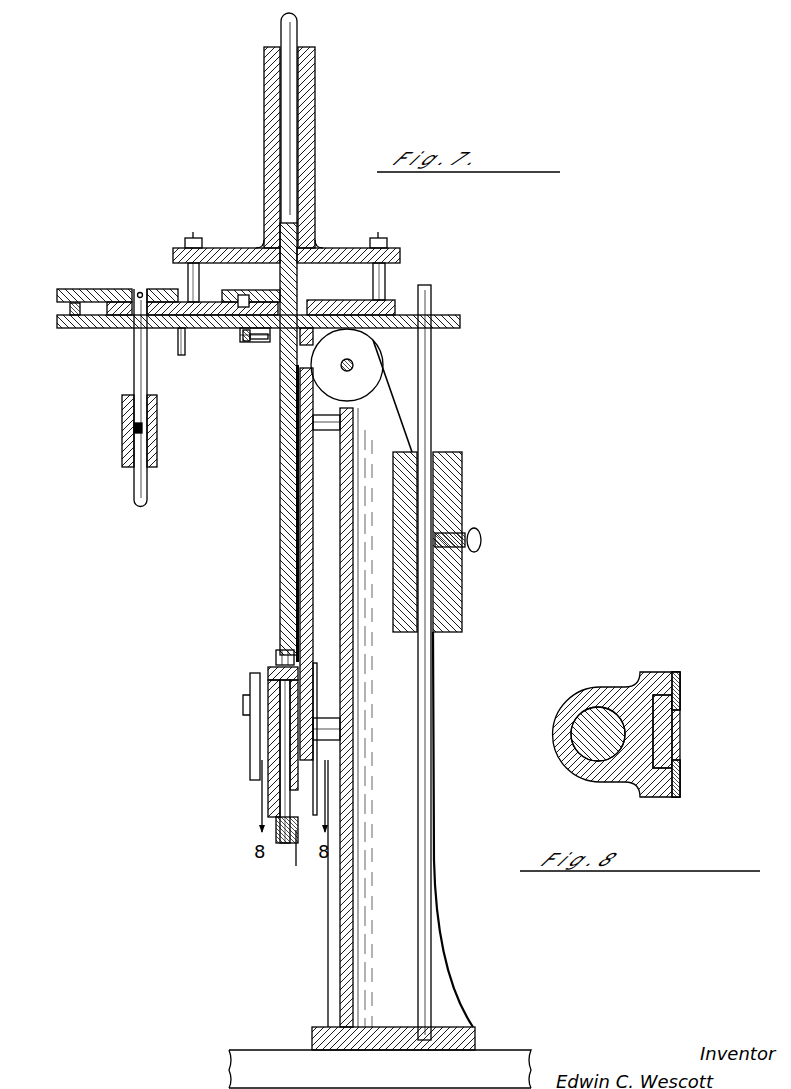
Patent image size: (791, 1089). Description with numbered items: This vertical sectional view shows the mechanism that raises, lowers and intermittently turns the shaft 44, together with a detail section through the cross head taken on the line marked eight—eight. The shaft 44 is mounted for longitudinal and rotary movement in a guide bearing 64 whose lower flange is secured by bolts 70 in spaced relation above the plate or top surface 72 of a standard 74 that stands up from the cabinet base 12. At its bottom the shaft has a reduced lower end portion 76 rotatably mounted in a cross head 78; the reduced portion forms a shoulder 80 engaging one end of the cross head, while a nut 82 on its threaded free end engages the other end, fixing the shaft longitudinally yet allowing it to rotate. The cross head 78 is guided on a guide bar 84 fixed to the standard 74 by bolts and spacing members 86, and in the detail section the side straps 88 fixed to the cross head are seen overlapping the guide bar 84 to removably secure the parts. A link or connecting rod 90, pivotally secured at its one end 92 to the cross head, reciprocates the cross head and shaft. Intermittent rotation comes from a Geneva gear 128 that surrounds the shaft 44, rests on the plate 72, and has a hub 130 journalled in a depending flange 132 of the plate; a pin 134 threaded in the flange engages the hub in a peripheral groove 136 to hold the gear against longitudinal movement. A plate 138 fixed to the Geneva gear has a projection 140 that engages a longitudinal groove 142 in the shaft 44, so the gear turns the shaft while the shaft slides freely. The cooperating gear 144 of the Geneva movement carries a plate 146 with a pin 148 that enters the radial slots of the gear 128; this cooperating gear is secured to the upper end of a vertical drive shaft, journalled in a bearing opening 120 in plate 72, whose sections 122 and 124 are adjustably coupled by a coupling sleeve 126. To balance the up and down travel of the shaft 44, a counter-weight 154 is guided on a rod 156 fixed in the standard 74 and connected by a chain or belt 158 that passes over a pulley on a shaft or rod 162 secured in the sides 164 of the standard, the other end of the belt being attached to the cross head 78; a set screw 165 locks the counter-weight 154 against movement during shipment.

In FIG. 7, the cabinet base 12 is at (494, 1060).
In FIG. 7, the shaft 44 is at (300, 28).
In FIG. 7, the guide bearing 64 is at (316, 113).
In FIG. 7, the bolts 70 is at (380, 240).
In FIG. 7, the plate or top surface 72 is at (459, 316).
In FIG. 7, the standard 74 is at (371, 914).
In FIG. 7, the reduced lower end portion 76 is at (272, 800).
In FIG. 8, the reduced lower end portion 76 is at (572, 762).
In FIG. 7, the cross head 78 is at (268, 702).
In FIG. 8, the cross head 78 is at (612, 775).
In FIG. 7, the shoulder 80 is at (276, 656).
In FIG. 7, the nut 82 is at (298, 861).
In FIG. 7, the guide bar 84 is at (299, 553).
In FIG. 8, the guide bar 84 is at (674, 731).
In FIG. 7, the bolts and spacing members 86 is at (338, 426).
In FIG. 8, the side straps 88 is at (681, 695).
In FIG. 7, the link or connecting rod 90 is at (250, 781).
In FIG. 7, the one end of connecting rod 92 is at (250, 700).
In FIG. 7, the bearing opening 120 is at (134, 330).
In FIG. 7, the shaft section 122 is at (134, 489).
In FIG. 7, the shaft section 124 is at (133, 372).
In FIG. 7, the coupling sleeve 126 is at (122, 418).
In FIG. 7, the Geneva gear 128 is at (396, 301).
In FIG. 7, the hub 130 is at (264, 342).
In FIG. 7, the depending flange 132 is at (252, 342).
In FIG. 7, the bracket 134 is at (246, 333).
In FIG. 7, the pin 136 is at (300, 308).
In FIG. 7, the plate 138 is at (277, 296).
In FIG. 7, the projection 140 is at (297, 292).
In FIG. 7, the longitudinal groove 142 is at (184, 357).
In FIG. 7, the cooperating gear 144 is at (119, 300).
In FIG. 7, the plate 146 is at (82, 289).
In FIG. 7, the pin 148 is at (68, 308).
In FIG. 7, the counter-weight 154 is at (463, 468).
In FIG. 7, the rod 156 is at (432, 381).
In FIG. 7, the chain or belt 158 is at (298, 600).
In FIG. 7, the shaft or rod 162 is at (356, 362).
In FIG. 7, the sides of standard 164 is at (432, 681).
In FIG. 7, the set screw 165 is at (472, 530).